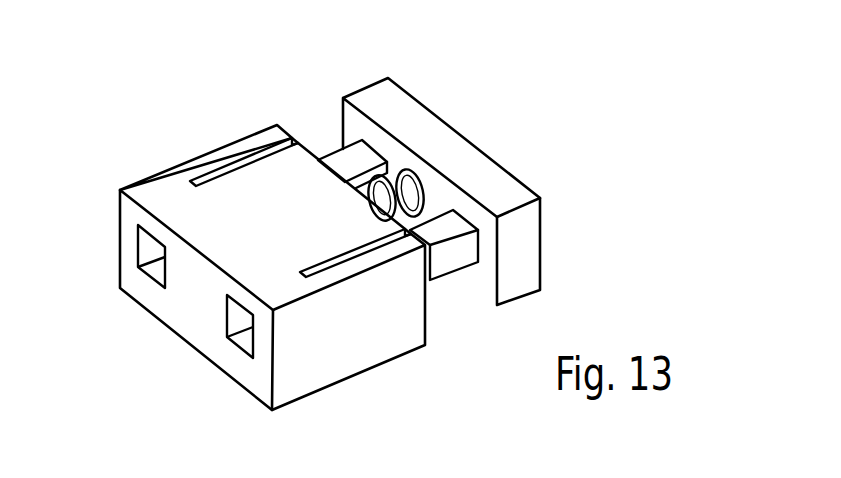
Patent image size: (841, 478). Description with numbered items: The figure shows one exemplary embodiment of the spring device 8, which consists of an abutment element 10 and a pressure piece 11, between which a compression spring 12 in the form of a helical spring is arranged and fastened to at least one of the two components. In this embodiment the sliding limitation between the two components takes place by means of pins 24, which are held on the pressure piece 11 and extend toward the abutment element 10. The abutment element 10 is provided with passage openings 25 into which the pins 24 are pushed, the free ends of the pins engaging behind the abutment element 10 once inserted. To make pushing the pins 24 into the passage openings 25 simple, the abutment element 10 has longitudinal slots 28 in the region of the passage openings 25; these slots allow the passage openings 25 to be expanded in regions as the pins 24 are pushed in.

The spring device 8 is at (546, 154).
The abutment element 10 is at (178, 182).
The pressure piece 11 is at (450, 155).
The compression spring 12 is at (395, 178).
The pins 24 is at (338, 158).
The passage openings 25 is at (245, 343).
The longitudinal slots 28 is at (370, 243).